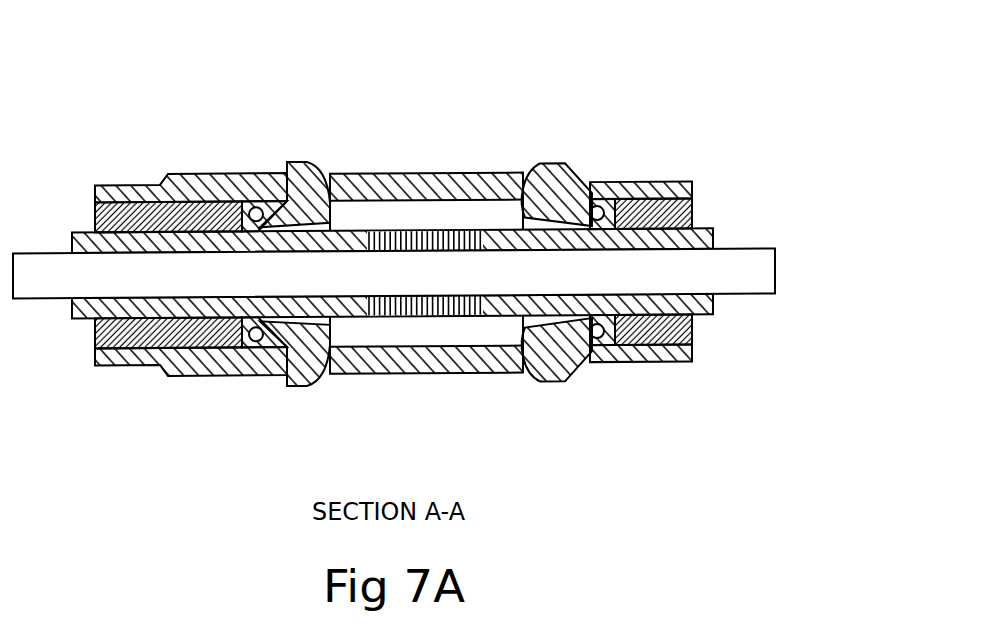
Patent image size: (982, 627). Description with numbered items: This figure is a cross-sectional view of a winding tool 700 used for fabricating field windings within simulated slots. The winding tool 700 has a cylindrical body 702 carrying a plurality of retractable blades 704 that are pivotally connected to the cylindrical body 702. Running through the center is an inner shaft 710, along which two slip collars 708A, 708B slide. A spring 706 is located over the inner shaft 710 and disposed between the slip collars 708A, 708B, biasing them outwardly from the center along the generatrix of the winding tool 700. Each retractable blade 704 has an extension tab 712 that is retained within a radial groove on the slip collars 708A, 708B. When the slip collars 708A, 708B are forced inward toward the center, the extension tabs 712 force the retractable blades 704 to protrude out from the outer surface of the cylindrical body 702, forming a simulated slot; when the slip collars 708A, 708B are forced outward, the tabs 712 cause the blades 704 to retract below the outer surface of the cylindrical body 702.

The winding tool 700 is at (392, 350).
The cylindrical body 702 is at (428, 173).
The retractable blades 704 is at (554, 163).
The spring 706 is at (407, 232).
The slip collar 708A is at (80, 321).
The slip collar 708B is at (708, 317).
The inner shaft 710 is at (748, 250).
The extension tab 712 is at (603, 251).